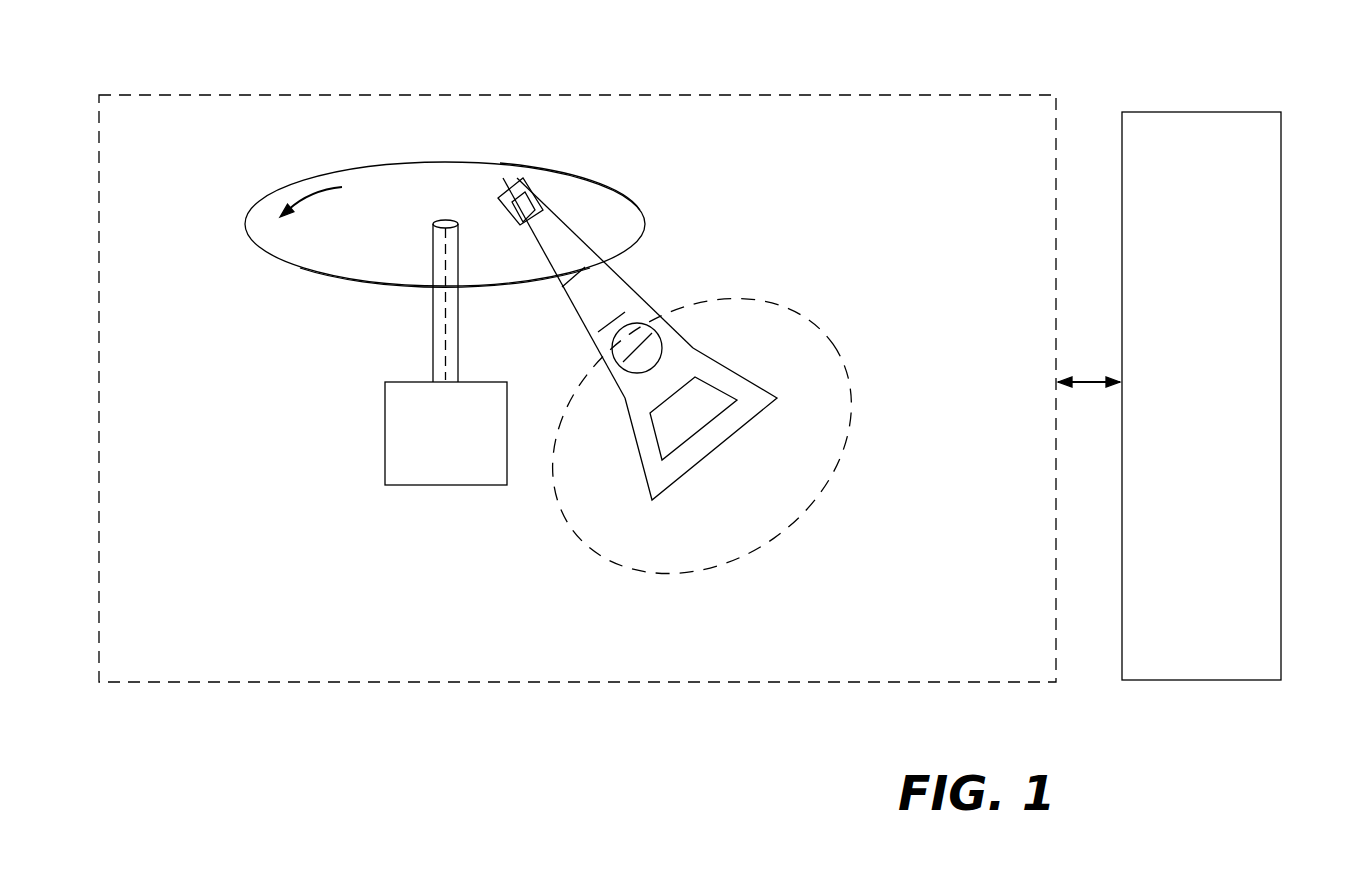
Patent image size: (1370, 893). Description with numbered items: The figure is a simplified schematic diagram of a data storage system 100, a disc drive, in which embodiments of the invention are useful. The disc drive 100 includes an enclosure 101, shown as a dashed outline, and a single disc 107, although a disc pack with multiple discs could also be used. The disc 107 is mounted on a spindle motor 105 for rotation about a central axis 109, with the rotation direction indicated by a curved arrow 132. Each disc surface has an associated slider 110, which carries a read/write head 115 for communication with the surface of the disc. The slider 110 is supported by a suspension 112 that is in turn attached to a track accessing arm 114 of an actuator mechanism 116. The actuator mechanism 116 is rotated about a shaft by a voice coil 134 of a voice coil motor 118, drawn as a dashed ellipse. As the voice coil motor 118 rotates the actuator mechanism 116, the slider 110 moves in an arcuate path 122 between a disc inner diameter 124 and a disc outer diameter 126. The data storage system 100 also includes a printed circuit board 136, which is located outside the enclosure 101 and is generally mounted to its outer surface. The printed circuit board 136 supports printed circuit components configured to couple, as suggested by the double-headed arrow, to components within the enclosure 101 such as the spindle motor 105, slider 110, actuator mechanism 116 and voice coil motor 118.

The data storage system 100 is at (1240, 48).
The enclosure 101 is at (677, 683).
The spindle motor 105 is at (398, 460).
The disc 107 is at (268, 233).
The central axis 109 is at (443, 300).
The slider 110 is at (497, 202).
The suspension 112 is at (562, 248).
The track accessing arm 114 is at (602, 295).
The transducer head 115 is at (523, 208).
The actuator mechanism 116 is at (597, 342).
The voice coil motor 118 is at (655, 550).
The arcuate path 122 is at (473, 215).
The disc inner diameter 124 is at (433, 223).
The disc outer diameter 126 is at (592, 180).
The direction of disc rotation 132 is at (317, 190).
The voice coil 134 is at (650, 460).
The printed circuit board 136 is at (1281, 165).